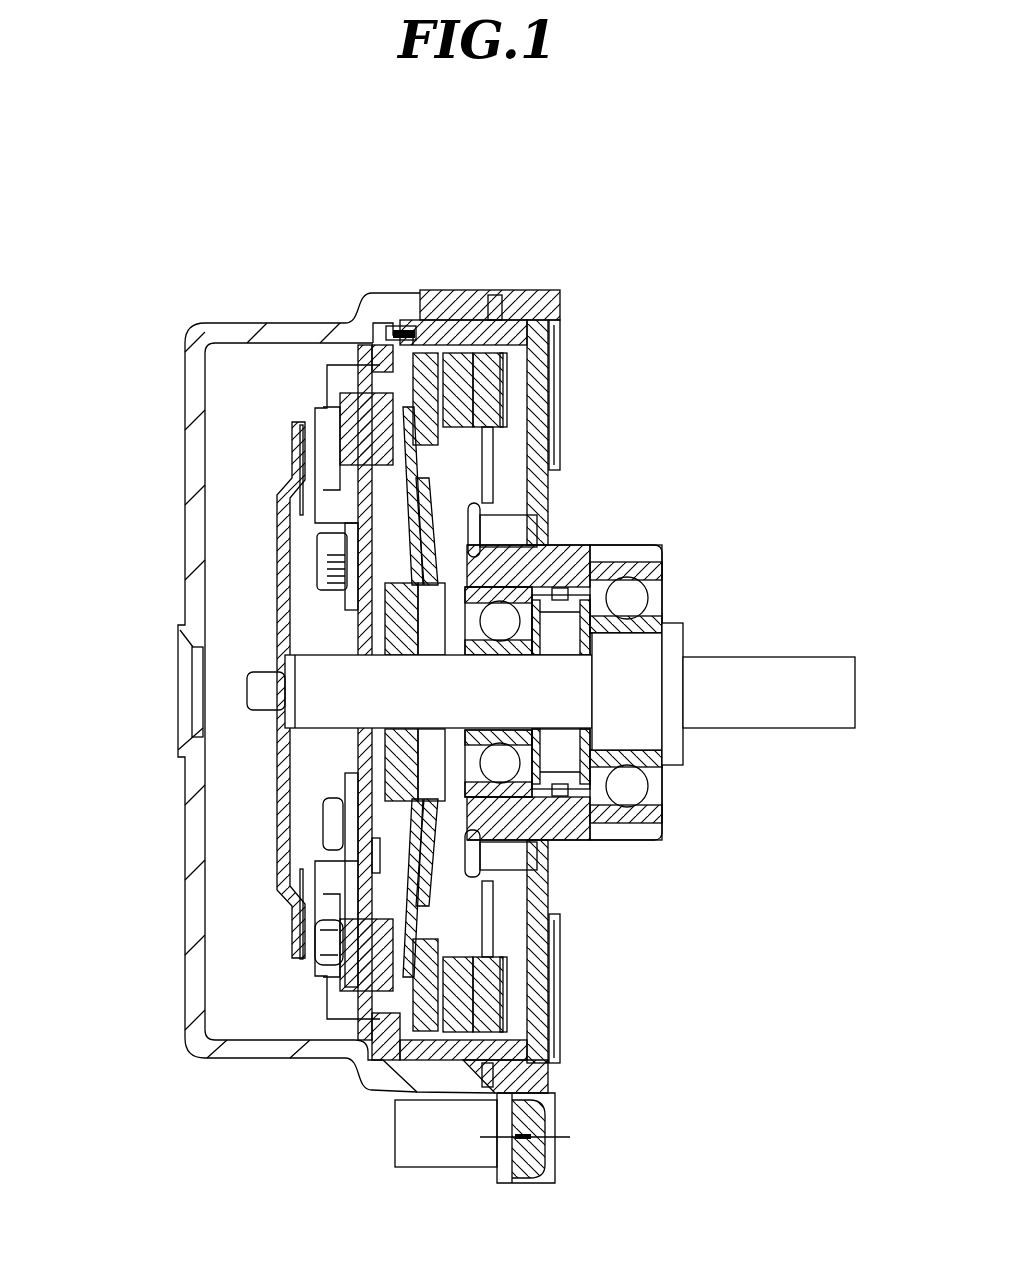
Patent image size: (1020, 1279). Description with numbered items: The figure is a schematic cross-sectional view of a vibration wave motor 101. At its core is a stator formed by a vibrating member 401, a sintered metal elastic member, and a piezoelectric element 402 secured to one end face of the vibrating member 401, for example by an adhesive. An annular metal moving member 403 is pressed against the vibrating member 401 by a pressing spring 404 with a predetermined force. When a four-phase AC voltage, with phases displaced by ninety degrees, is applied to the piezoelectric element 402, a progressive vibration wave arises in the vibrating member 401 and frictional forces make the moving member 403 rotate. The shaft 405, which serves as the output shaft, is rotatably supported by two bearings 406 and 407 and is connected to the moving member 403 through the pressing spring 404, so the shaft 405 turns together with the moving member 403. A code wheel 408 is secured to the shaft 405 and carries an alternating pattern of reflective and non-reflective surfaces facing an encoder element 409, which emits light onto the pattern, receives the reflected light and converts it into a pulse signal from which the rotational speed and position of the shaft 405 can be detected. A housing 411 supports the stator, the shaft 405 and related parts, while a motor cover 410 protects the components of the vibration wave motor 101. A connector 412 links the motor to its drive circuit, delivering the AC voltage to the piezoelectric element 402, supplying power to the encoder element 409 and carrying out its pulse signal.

The vibration wave motor 101 is at (190, 305).
The vibrating member 401 is at (505, 357).
The piezoelectric element 402 is at (470, 338).
The moving member 403 is at (400, 333).
The pressing spring 404 is at (440, 512).
The shaft 405 is at (502, 675).
The bearing 406 is at (560, 608).
The bearing 407 is at (667, 578).
The code wheel 408 is at (278, 805).
The encoder element 409 is at (322, 958).
The motor cover 410 is at (184, 500).
The housing 411 is at (555, 1090).
The connector 412 is at (413, 1145).